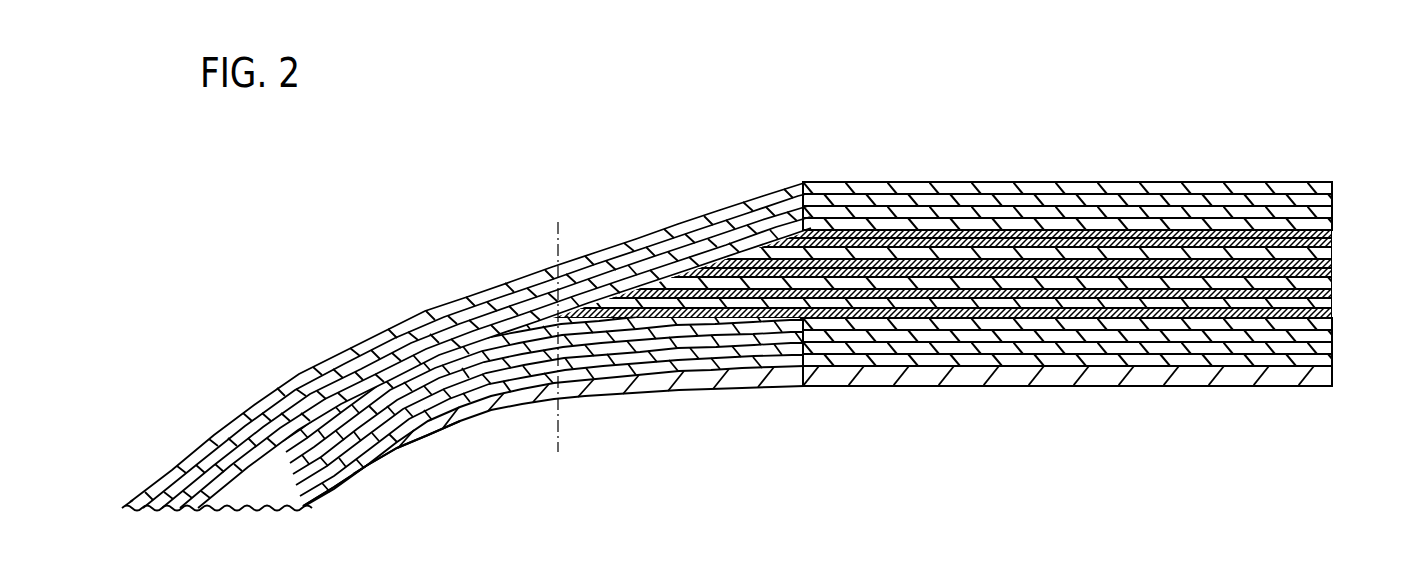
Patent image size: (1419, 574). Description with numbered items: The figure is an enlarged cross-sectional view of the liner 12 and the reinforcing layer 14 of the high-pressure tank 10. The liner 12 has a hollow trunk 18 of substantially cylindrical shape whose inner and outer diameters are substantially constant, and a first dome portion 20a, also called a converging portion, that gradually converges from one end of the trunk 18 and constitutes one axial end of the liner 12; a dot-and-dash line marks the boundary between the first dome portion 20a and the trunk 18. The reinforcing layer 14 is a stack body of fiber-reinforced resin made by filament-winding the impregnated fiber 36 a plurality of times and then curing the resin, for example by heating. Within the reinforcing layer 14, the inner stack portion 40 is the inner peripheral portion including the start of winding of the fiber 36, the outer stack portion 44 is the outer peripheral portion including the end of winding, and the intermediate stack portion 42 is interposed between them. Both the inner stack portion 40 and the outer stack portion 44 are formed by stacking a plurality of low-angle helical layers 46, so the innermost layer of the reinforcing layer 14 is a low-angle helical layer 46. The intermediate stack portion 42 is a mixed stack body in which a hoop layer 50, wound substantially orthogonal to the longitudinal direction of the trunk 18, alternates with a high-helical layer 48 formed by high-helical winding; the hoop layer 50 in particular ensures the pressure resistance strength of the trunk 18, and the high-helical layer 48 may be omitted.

The high-pressure tank 10 is at (354, 208).
The liner 12 is at (823, 392).
The reinforcing layer 14 is at (842, 178).
The trunk 18 is at (718, 373).
The first dome portion 20a is at (408, 434).
The impregnated fiber 36 is at (944, 190).
The inner stack portion 40 is at (1336, 322).
The intermediate stack portion 42 is at (1336, 233).
The outer stack portion 44 is at (1336, 184).
The low-angle helical layer 46 is at (1106, 247).
The high-helical layer 48 is at (1258, 258).
The hoop layer 50 is at (1190, 244).